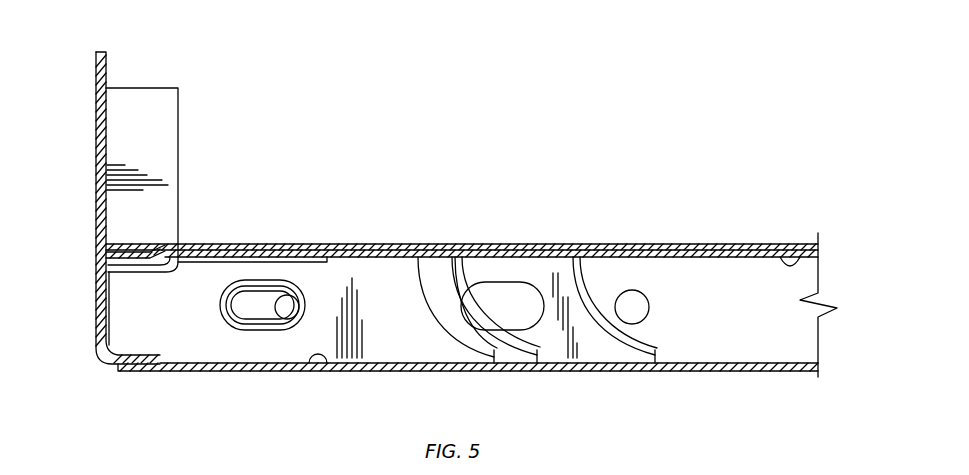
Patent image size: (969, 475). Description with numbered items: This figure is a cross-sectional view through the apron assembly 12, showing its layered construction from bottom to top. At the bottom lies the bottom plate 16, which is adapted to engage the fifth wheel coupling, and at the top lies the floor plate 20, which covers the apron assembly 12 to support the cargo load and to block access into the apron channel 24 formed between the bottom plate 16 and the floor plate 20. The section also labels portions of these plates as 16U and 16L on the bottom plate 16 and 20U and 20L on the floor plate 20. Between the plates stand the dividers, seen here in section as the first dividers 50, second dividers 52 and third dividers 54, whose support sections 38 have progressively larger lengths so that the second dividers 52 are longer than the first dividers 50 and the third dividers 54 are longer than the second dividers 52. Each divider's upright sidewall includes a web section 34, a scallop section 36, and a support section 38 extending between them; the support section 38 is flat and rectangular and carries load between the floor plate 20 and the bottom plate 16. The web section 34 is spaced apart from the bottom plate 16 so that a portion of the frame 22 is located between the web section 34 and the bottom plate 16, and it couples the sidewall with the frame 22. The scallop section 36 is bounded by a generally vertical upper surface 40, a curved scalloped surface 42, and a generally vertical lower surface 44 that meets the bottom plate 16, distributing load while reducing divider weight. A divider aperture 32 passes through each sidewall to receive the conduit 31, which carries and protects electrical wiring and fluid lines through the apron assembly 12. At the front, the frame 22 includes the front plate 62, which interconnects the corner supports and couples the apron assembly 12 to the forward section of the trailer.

The apron assembly 12 is at (566, 72).
The bottom plate 16 is at (288, 371).
The upper surface of lower flange 16U is at (308, 372).
The lower surface of lower flange 16L is at (353, 372).
The floor plate 20 is at (650, 248).
The upper wall of beam 20U is at (722, 246).
The lower layer of upper wall 20L is at (800, 255).
The frame 22 is at (95, 150).
The apron channel 24 is at (778, 345).
The conduit 31 is at (300, 301).
The divider aperture 32 is at (268, 303).
The web section 34 is at (128, 318).
The scallop section 36 is at (428, 322).
The support section 38 is at (203, 273).
The upper surface 40 is at (438, 293).
The scalloped surface 42 is at (424, 265).
The lower surface 44 is at (502, 362).
The first divider 50 is at (302, 290).
The second divider 52 is at (449, 258).
The third divider 54 is at (568, 280).
The front plate 62 is at (96, 200).